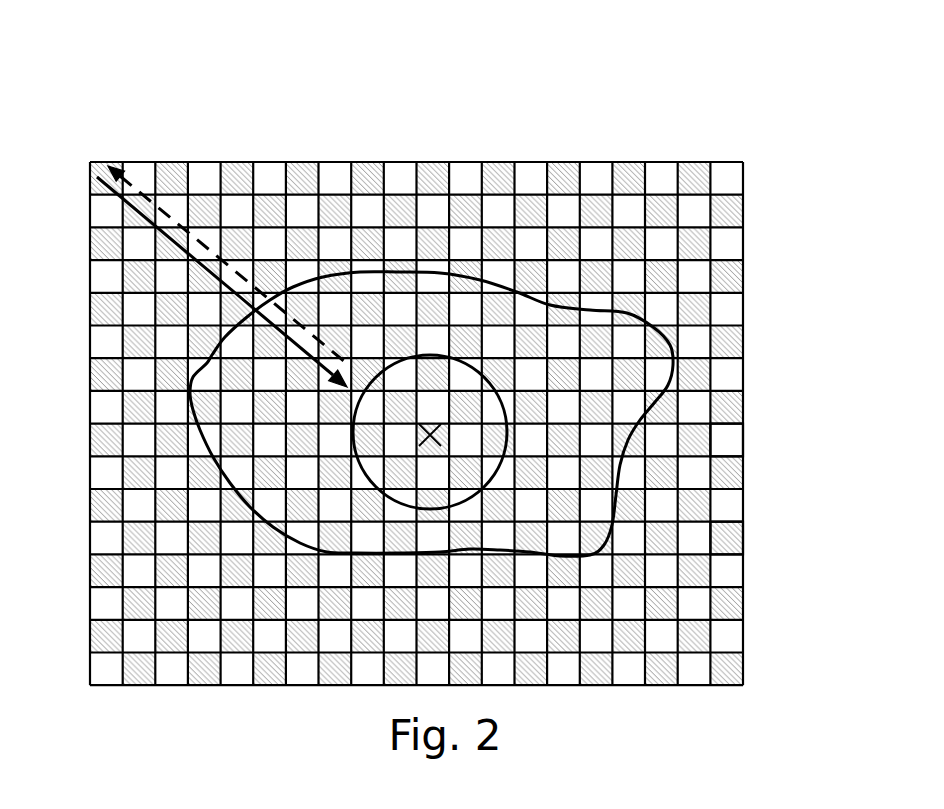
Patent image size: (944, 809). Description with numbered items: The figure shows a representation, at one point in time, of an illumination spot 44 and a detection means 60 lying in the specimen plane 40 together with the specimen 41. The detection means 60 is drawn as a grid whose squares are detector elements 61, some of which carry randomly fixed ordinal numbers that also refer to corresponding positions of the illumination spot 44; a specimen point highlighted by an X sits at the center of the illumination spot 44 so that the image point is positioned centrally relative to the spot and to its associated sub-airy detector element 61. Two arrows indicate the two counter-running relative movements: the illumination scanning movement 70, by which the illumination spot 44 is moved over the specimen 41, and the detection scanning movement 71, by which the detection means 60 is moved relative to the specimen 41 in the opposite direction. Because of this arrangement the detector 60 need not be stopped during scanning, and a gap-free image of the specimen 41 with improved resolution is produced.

The specimen plane 40 is at (447, 353).
The specimen 41 is at (628, 535).
The illumination spot 44 is at (496, 373).
The detection means 60 is at (482, 423).
The detector element 61 is at (728, 441).
The illumination scanning movement 70 is at (206, 224).
The detection scanning movement 71 is at (129, 219).